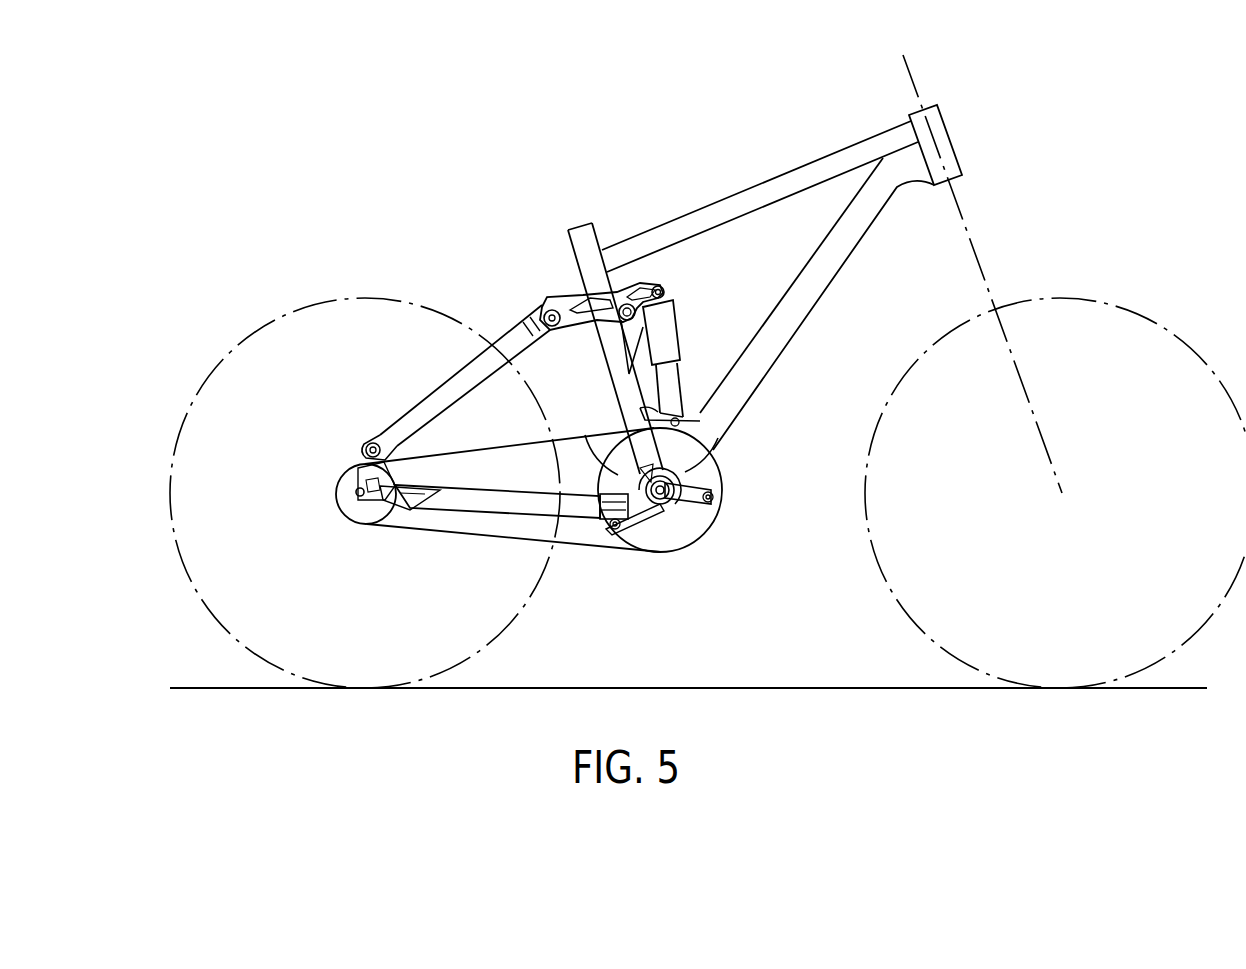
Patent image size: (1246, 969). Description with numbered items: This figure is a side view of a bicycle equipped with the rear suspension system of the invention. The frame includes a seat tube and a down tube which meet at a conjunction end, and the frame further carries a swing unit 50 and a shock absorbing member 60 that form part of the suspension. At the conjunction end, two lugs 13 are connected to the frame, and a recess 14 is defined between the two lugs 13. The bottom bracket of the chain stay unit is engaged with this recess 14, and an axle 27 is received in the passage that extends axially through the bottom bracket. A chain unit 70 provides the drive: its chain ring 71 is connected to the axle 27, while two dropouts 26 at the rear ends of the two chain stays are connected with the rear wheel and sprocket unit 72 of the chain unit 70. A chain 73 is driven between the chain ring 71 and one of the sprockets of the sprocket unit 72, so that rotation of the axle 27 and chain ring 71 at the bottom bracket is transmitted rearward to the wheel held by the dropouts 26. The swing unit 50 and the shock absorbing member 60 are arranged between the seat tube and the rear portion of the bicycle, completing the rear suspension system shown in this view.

The lugs 13 is at (604, 482).
The recess 14 is at (683, 465).
The dropouts 26 is at (356, 491).
The axle 27 is at (660, 497).
The swing unit 50 is at (526, 289).
The shock absorbing member 60 is at (696, 323).
The chain unit 70 is at (478, 546).
The chain ring 71 is at (703, 534).
The rear wheel and sprocket unit 72 is at (344, 514).
The chain 73 is at (584, 548).